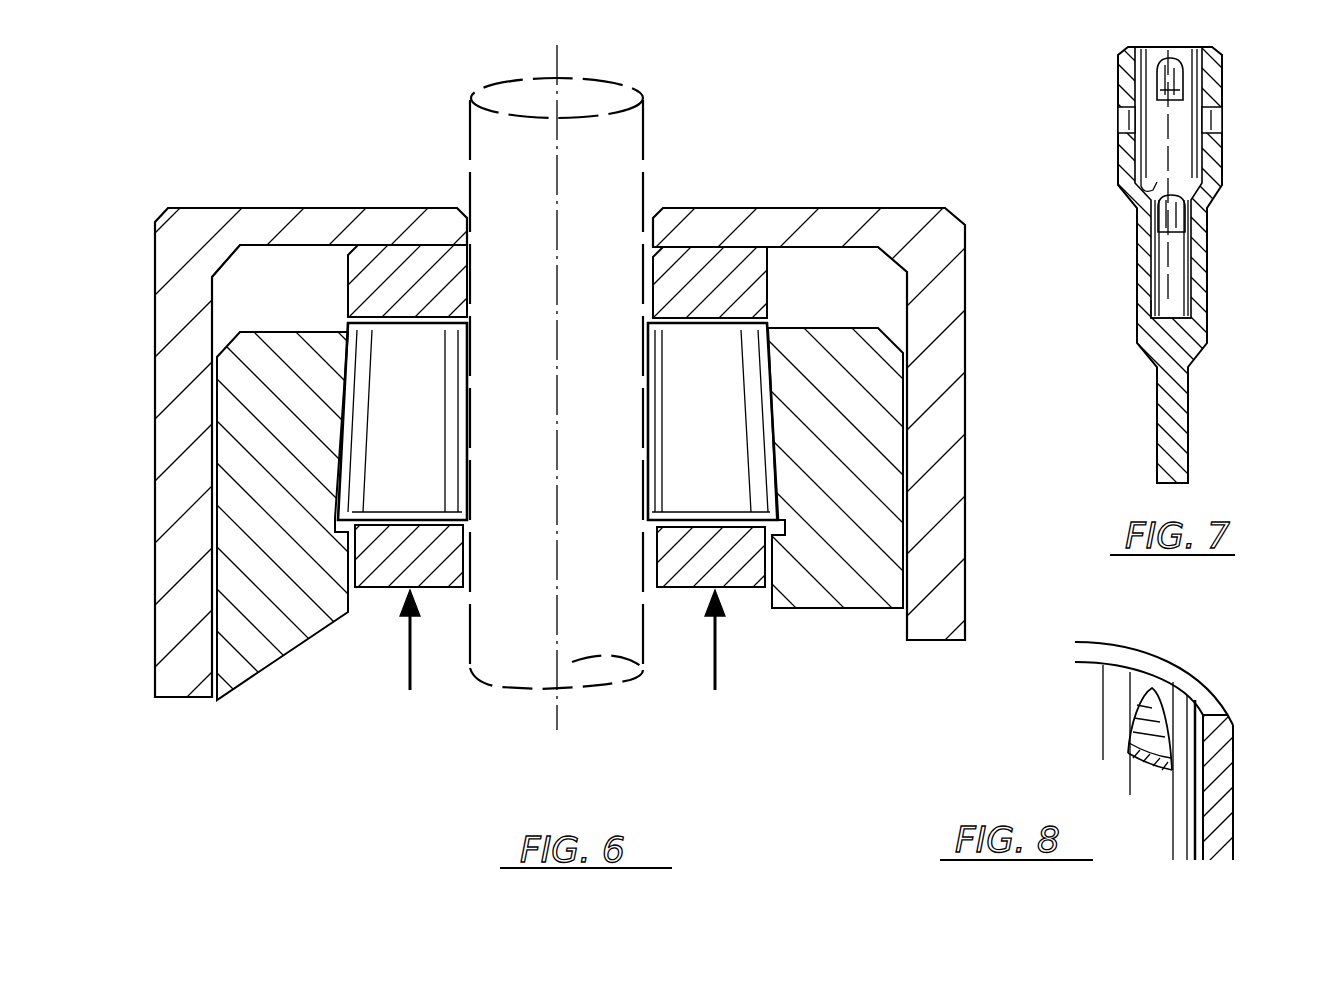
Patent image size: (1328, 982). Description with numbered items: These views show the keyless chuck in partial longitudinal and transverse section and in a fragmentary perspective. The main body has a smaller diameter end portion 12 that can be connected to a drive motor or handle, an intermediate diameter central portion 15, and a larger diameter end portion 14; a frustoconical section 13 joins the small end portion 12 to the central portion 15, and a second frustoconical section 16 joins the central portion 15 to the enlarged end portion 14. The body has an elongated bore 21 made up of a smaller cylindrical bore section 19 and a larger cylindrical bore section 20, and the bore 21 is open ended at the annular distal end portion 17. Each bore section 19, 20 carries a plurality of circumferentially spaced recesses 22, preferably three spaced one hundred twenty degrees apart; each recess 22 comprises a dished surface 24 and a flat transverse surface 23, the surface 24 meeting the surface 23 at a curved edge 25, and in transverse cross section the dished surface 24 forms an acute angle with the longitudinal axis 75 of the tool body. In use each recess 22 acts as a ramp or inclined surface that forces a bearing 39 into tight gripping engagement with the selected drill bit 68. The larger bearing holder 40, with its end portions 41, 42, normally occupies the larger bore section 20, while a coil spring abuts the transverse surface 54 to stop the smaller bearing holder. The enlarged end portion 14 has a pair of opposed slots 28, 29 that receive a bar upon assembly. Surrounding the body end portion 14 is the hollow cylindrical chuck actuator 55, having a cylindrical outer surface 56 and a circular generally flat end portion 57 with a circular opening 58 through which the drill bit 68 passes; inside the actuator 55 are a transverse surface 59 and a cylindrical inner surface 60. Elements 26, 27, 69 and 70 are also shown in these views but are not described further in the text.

In FIG. 7, the smaller diameter end portion 12 is at (1001, 491).
In FIG. 7, the frustoconical section 13 is at (1001, 491).
In FIG. 6, the larger diameter end portion 14 is at (664, 491).
In FIG. 7, the larger diameter end portion 14 is at (1001, 491).
In FIG. 8, the larger diameter end portion 14 is at (1220, 775).
In FIG. 7, the intermediate diameter central portion 15 is at (1001, 491).
In FIG. 7, the frustoconical section 16 is at (1001, 491).
In FIG. 6, the annular distal end portion 17 is at (664, 491).
In FIG. 7, the annular distal end portion 17 is at (1131, 180).
In FIG. 8, the annular distal end portion 17 is at (1154, 730).
In FIG. 7, the smaller cylindrical bore section 19 is at (1152, 320).
In FIG. 6, the larger cylindrical bore section 20 is at (375, 618).
In FIG. 7, the larger cylindrical bore section 20 is at (1168, 158).
In FIG. 7, the elongated bore 21 is at (1200, 47).
In FIG. 7, the recess 22 is at (1126, 176).
In FIG. 8, the recess 22 is at (1097, 763).
In FIG. 6, the flat transverse surface 23 is at (345, 548).
In FIG. 8, the flat transverse surface 23 is at (1110, 763).
In FIG. 6, the dished surface 24 is at (664, 491).
In FIG. 8, the dished surface 24 is at (1110, 763).
In FIG. 8, the curved edge 25 is at (1160, 775).
In FIG. 8, the slot 26 is at (1115, 668).
In FIG. 7, the crimp 27 is at (1150, 188).
In FIG. 7, the slot 28 is at (1001, 491).
In FIG. 7, the slot 29 is at (1001, 491).
In FIG. 6, the bearing 39 is at (558, 421).
In FIG. 6, the larger bearing holder 40 is at (664, 491).
In FIG. 6, the end portion 41 is at (685, 245).
In FIG. 6, the end portion 42 is at (745, 590).
In FIG. 7, the transverse surface 54 is at (1001, 491).
In FIG. 6, the chuck actuator 55 is at (664, 491).
In FIG. 6, the cylindrical outer surface 56 is at (664, 491).
In FIG. 6, the flat end portion 57 is at (664, 491).
In FIG. 6, the circular opening 58 is at (455, 185).
In FIG. 6, the transverse surface 59 is at (340, 255).
In FIG. 6, the cylindrical inner surface 60 is at (218, 286).
In FIG. 6, the drill bit 68 is at (609, 396).
In FIG. 6, the force arrow 69 is at (410, 660).
In FIG. 6, the direction arrow 70 is at (415, 430).
In FIG. 6, the longitudinal axis 75 is at (568, 68).